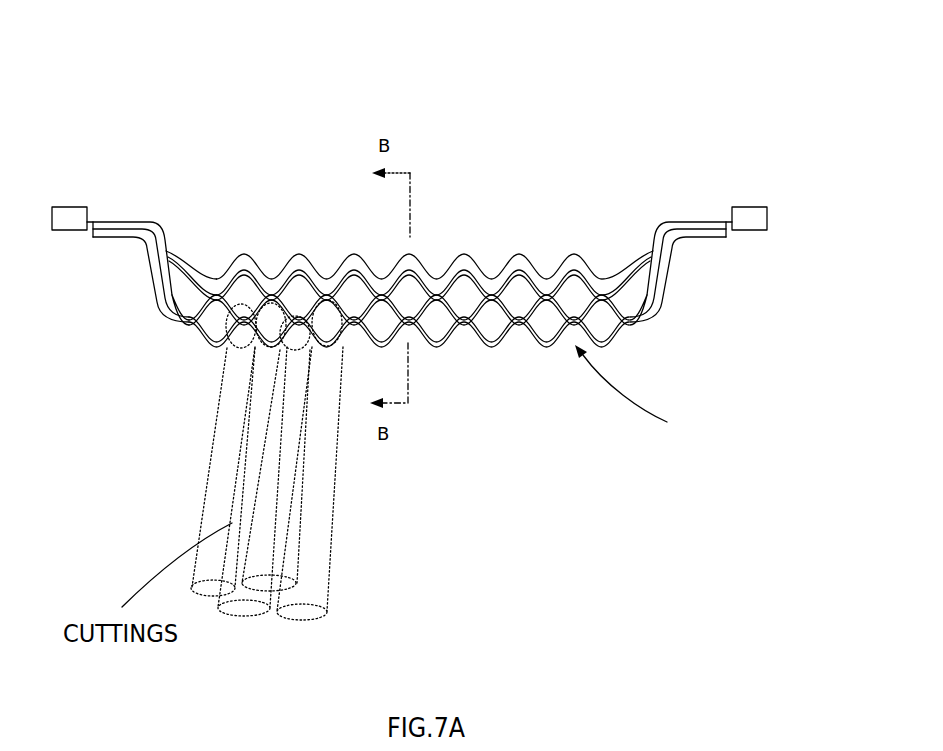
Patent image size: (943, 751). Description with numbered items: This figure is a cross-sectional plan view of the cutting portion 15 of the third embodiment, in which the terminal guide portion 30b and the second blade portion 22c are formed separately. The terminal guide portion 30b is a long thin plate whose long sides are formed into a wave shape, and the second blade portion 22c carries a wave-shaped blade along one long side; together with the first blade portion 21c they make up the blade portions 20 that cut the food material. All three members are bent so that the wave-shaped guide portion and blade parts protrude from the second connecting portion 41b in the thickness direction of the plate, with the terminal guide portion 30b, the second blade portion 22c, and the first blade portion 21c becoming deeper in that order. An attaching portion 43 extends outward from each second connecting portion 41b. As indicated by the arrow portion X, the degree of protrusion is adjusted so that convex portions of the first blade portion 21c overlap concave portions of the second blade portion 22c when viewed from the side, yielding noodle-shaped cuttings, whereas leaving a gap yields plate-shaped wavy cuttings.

The cutting portion 15 is at (720, 112).
The attaching portion 43 is at (62, 212).
The second connecting portion 41b is at (125, 222).
The terminal guide portion 30b is at (467, 256).
The second blade portion 22c is at (516, 272).
The blade portions 20 is at (375, 260).
The first blade portion 21c is at (497, 345).
The arrow portion X is at (639, 394).